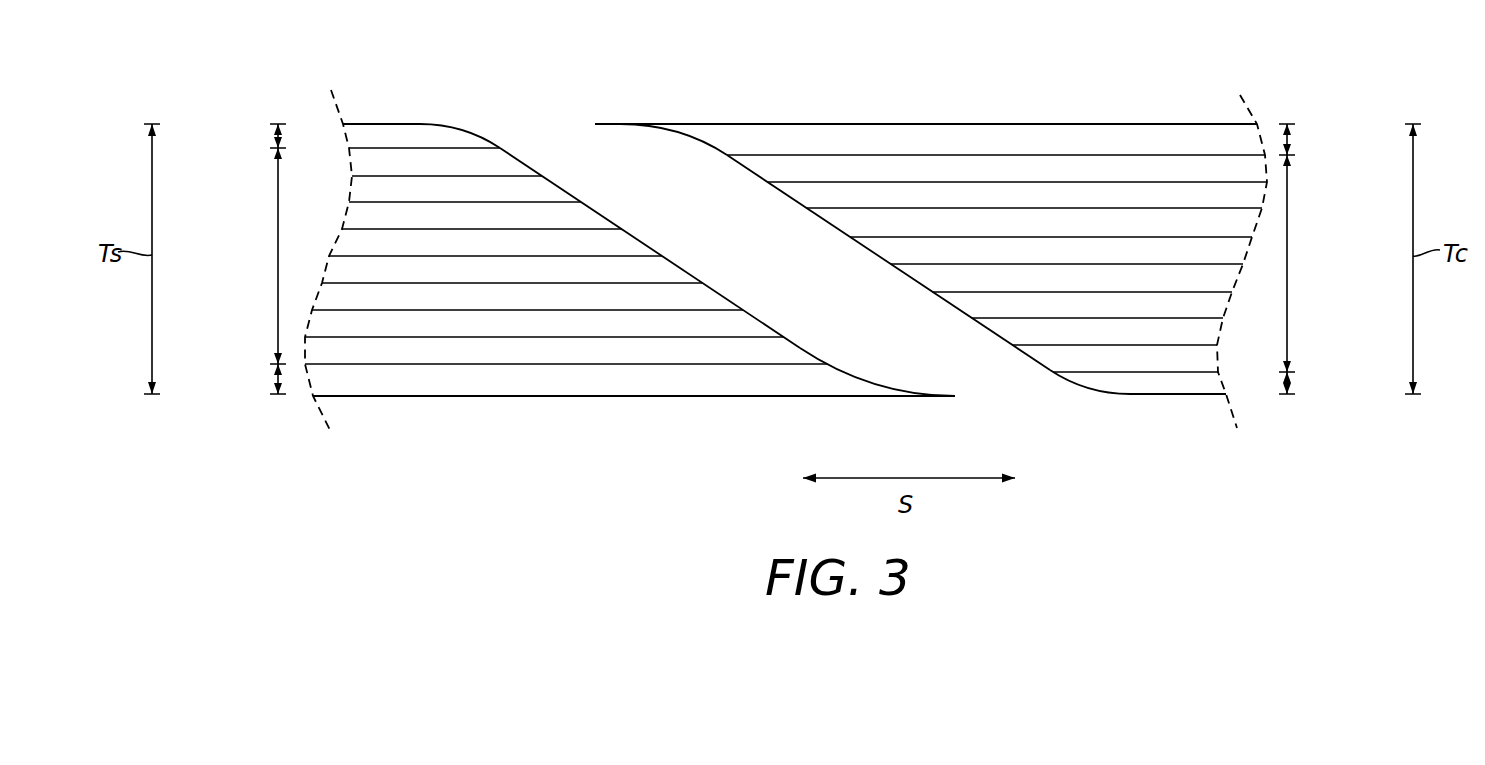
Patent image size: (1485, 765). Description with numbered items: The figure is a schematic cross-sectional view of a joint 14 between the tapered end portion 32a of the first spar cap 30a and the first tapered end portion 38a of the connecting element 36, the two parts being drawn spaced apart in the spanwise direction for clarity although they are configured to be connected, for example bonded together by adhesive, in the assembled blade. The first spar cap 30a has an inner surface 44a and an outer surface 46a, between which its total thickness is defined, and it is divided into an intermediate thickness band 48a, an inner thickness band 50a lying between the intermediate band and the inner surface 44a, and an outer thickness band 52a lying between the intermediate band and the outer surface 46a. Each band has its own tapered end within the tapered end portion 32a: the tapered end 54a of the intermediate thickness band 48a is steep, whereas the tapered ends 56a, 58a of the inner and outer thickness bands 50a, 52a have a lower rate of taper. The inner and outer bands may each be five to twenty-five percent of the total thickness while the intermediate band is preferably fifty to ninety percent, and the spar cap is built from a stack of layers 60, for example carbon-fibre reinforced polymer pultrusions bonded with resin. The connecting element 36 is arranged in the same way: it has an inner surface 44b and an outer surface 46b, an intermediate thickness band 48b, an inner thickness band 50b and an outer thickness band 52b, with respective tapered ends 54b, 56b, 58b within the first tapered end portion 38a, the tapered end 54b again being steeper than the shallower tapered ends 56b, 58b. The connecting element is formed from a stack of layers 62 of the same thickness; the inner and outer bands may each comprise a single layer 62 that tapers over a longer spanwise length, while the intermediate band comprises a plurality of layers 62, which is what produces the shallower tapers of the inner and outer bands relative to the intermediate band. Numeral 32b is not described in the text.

The joint 14 is at (578, 80).
The first spar cap 30a is at (364, 90).
The tapered end portion 32a is at (663, 424).
The second composite section 32b is at (1136, 431).
The connecting element 36 is at (1173, 109).
The first tapered end portion 38a is at (944, 100).
The inner surface 44a is at (485, 396).
The inner surface 44b is at (1182, 395).
The outer surface 46a is at (392, 124).
The outer surface 46b is at (1021, 124).
The intermediate thickness band 48a is at (232, 256).
The intermediate thickness band 48b is at (1338, 263).
The inner thickness band 50a is at (228, 380).
The inner thickness band 50b is at (1341, 382).
The outer thickness band 52a is at (228, 138).
The outer thickness band 52b is at (1343, 139).
The tapered end 54a is at (676, 234).
The tapered end 54b is at (843, 259).
The tapered end 56a is at (888, 369).
The tapered end 56b is at (1074, 402).
The tapered end 58a is at (469, 117).
The tapered end 58b is at (676, 152).
The layers 60 is at (395, 347).
The layers 62 is at (873, 173).